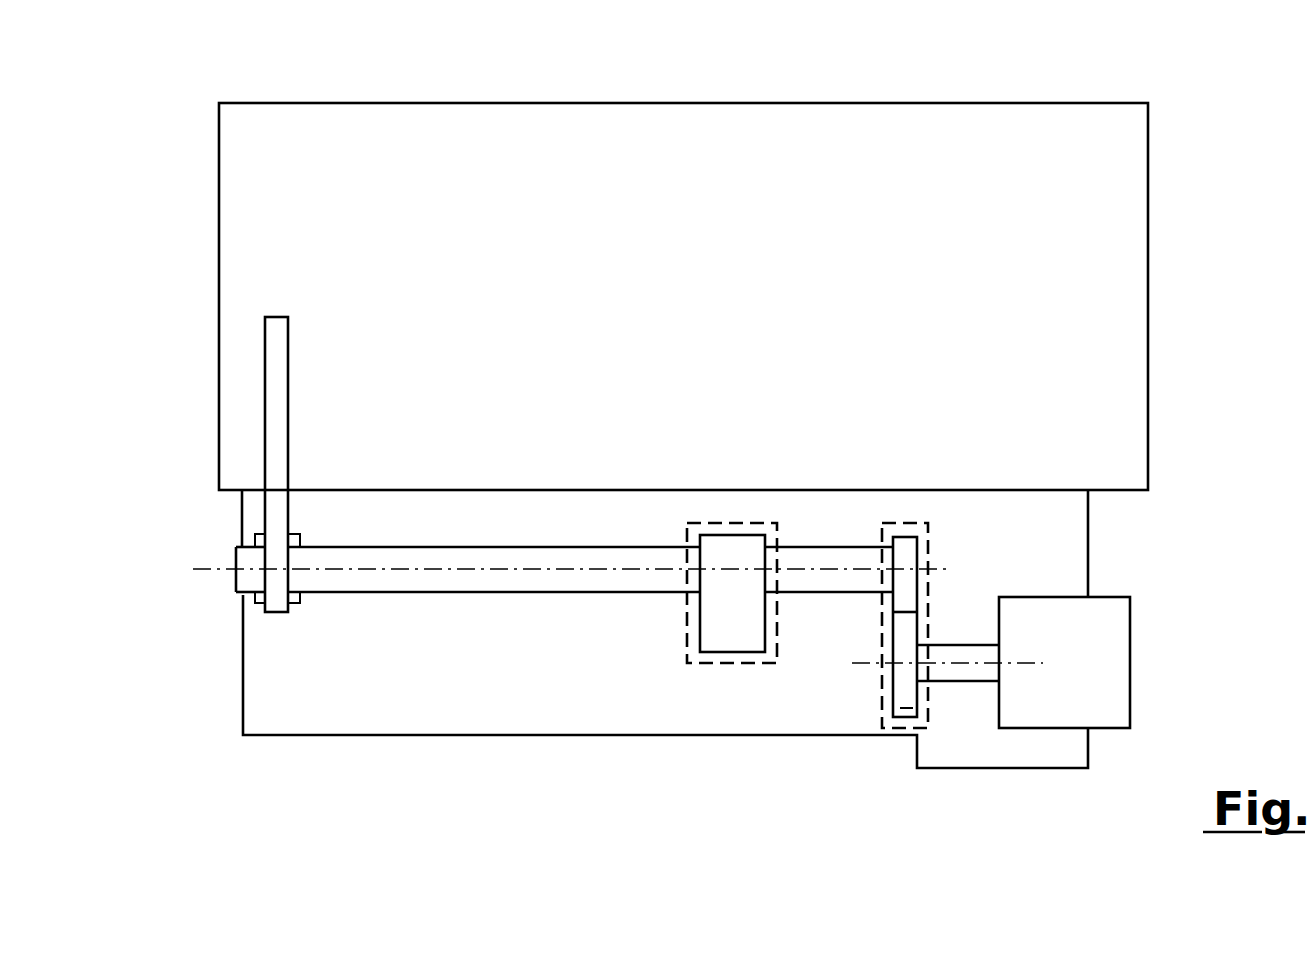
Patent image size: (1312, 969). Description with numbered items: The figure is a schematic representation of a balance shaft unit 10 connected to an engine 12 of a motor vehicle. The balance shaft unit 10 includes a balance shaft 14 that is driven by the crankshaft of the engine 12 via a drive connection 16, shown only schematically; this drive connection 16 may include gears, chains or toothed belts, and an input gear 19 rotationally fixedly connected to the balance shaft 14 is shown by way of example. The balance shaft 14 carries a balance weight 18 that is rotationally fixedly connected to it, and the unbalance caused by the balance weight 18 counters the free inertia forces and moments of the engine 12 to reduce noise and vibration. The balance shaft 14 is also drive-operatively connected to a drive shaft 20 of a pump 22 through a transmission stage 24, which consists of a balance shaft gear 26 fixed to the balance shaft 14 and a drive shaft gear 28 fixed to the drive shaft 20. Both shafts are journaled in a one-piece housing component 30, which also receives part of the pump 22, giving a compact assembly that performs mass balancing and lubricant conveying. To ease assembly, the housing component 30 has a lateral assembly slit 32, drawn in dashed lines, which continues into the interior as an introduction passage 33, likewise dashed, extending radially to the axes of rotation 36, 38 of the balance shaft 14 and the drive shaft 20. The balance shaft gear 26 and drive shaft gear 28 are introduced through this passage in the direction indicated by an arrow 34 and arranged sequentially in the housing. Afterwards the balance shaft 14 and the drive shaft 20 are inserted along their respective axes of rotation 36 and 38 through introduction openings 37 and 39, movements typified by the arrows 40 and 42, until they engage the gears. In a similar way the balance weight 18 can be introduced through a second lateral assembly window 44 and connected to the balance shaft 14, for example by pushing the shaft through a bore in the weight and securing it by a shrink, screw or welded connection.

The balance shaft unit 10 is at (482, 778).
The engine 12 is at (580, 103).
The balance shaft 14 is at (462, 592).
The drive connection 16 is at (264, 382).
The balance weight 18 is at (733, 652).
The input gear 19 is at (258, 538).
The drive shaft 20 is at (958, 682).
The pump 22 is at (1115, 595).
The transmission stage 24 is at (953, 607).
The balance shaft gear 26 is at (917, 543).
The drive shaft gear 28 is at (893, 700).
The housing component 30 is at (360, 735).
The assembly slit 32 is at (850, 768).
The introduction passage 33 is at (881, 670).
The arrow 34 is at (903, 752).
The axis of rotation 36 is at (213, 571).
The introduction opening 37 is at (236, 595).
The axis of rotation 38 is at (878, 660).
The introduction opening 39 is at (985, 686).
The arrow 40 is at (163, 568).
The arrow 42 is at (1157, 663).
The second lateral assembly window 44 is at (688, 623).